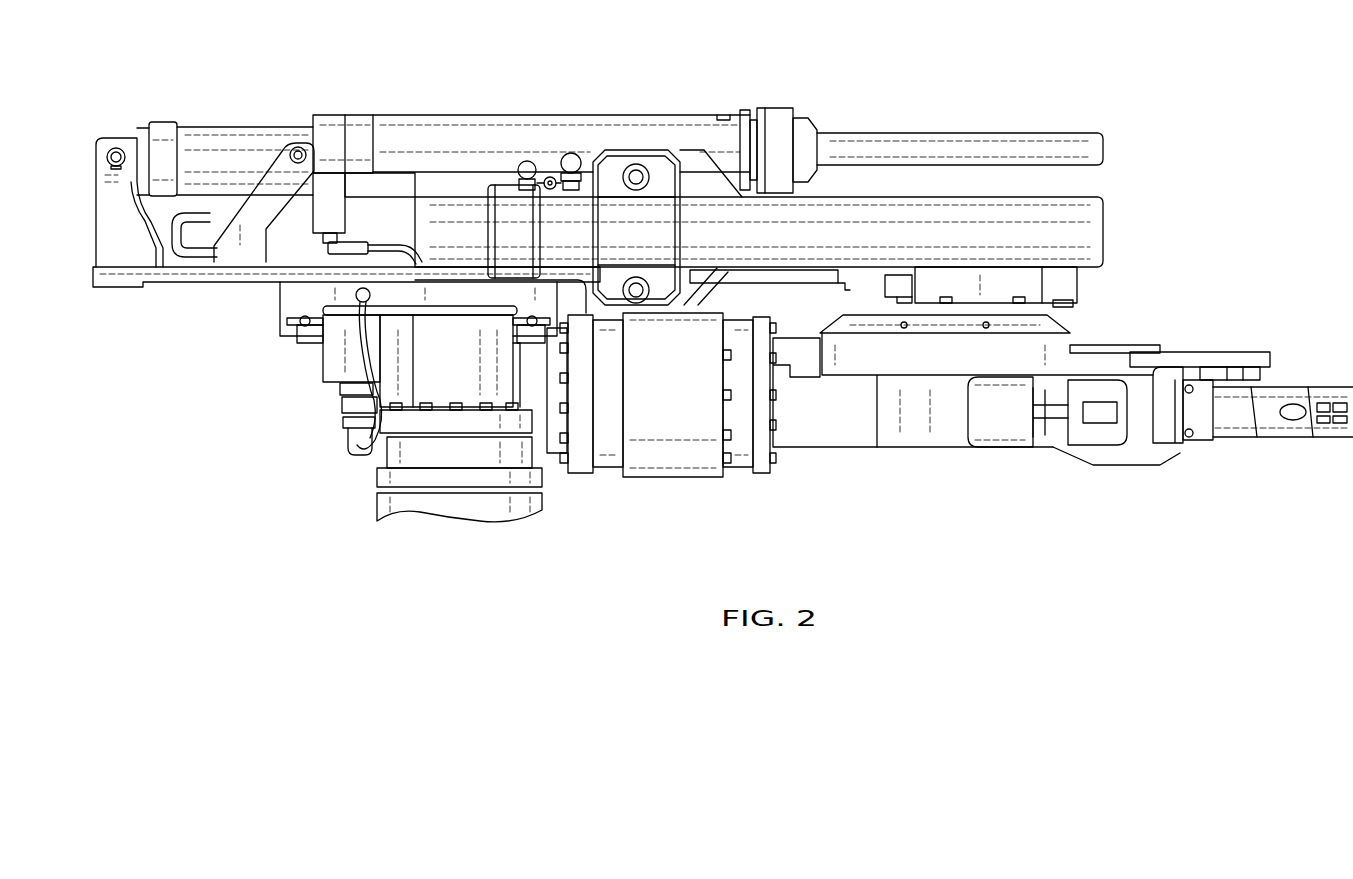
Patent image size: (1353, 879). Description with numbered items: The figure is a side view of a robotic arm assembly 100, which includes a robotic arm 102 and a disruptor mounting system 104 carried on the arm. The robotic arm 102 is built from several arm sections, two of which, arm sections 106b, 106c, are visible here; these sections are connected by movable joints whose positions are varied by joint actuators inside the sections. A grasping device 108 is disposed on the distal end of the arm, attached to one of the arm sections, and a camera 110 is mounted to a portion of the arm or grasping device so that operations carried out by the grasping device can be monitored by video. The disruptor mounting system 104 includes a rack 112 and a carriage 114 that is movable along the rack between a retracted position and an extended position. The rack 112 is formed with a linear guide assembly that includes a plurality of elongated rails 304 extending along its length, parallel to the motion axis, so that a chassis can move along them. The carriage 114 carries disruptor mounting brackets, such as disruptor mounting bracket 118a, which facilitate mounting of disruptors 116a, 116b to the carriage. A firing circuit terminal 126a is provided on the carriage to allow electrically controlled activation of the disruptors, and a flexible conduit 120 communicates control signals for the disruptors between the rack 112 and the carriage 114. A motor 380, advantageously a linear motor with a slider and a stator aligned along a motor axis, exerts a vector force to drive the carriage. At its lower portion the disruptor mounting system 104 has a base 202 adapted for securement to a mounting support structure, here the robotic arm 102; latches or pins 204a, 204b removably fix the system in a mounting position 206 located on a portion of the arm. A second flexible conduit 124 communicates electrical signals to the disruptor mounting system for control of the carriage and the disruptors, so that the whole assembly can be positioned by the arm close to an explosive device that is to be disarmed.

The robotic arm assembly 100 is at (1258, 122).
The robotic arm 102 is at (858, 470).
The disruptor mounting system 104 is at (118, 98).
The arm section 106b is at (475, 520).
The arm section 106c is at (682, 463).
The grasping device 108 is at (1302, 452).
The camera 110 is at (1080, 285).
The rack 112 is at (125, 283).
The carriage 114 is at (722, 172).
The disruptor 116a is at (1087, 222).
The disruptor 116b is at (1083, 143).
The disruptor mounting bracket 118a is at (650, 247).
The flexible conduit 120 is at (224, 213).
The flexible conduit 124 is at (392, 408).
The firing circuit terminal 126a is at (567, 154).
The base 202 is at (262, 328).
The latch or pin 204a is at (306, 325).
The latch or pin 204b is at (530, 322).
The mounting position 206 is at (452, 330).
The elongated rail 304 is at (343, 262).
The motor 380 is at (452, 98).